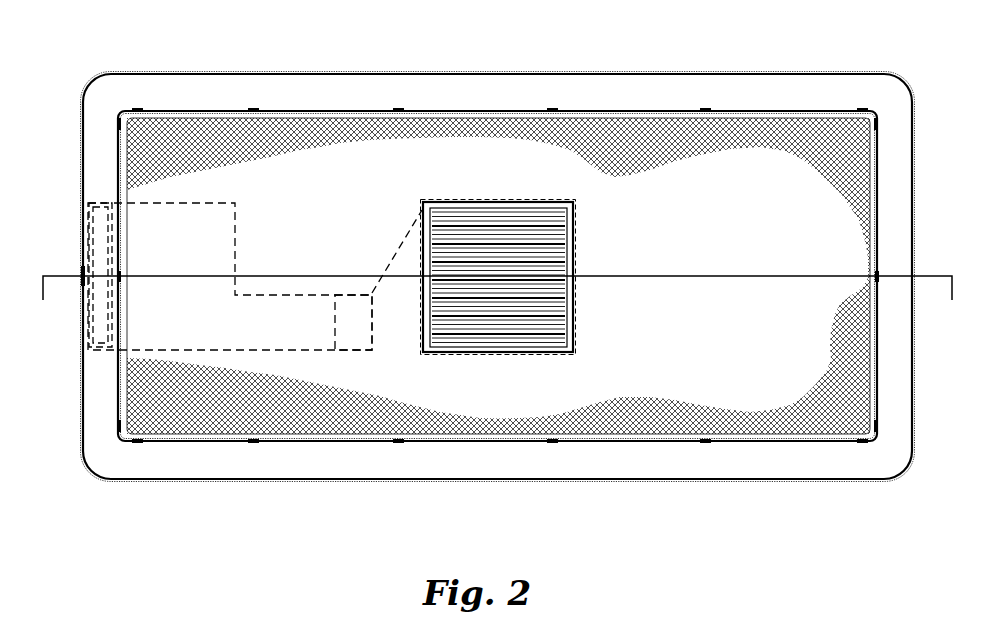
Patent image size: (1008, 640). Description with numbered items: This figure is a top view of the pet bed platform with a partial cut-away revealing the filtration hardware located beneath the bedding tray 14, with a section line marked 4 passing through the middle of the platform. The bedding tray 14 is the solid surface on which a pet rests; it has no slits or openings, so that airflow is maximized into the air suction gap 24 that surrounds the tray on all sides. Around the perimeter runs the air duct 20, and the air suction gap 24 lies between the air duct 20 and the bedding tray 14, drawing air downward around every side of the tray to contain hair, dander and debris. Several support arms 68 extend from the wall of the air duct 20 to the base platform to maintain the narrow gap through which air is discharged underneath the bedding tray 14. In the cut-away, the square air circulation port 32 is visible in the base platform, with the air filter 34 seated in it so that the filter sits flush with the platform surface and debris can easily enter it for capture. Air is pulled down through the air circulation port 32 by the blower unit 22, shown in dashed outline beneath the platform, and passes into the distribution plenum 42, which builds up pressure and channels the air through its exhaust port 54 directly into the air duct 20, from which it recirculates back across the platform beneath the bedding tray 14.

The section line 4- 4 is at (496, 304).
The bedding tray 14 is at (821, 130).
The air duct 20 is at (731, 87).
The blower unit 22 is at (392, 252).
The air suction gap 24 is at (587, 113).
The air circulation port 32 is at (467, 180).
The air filter 34 is at (438, 232).
The distribution plenum 42 is at (237, 218).
The exhaust port 54 is at (102, 222).
The support arm 68 is at (137, 110).